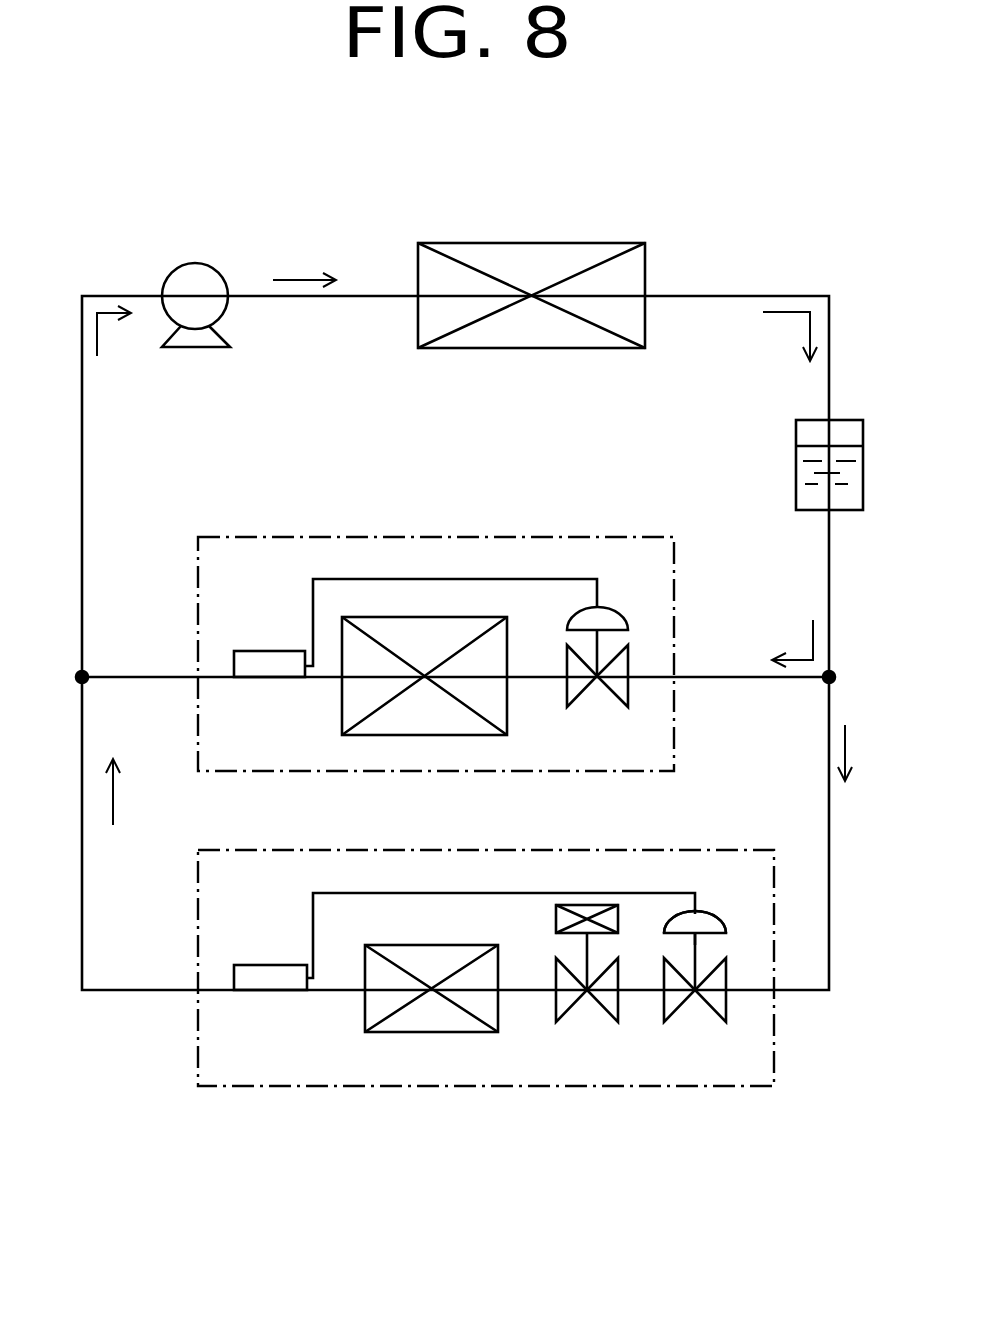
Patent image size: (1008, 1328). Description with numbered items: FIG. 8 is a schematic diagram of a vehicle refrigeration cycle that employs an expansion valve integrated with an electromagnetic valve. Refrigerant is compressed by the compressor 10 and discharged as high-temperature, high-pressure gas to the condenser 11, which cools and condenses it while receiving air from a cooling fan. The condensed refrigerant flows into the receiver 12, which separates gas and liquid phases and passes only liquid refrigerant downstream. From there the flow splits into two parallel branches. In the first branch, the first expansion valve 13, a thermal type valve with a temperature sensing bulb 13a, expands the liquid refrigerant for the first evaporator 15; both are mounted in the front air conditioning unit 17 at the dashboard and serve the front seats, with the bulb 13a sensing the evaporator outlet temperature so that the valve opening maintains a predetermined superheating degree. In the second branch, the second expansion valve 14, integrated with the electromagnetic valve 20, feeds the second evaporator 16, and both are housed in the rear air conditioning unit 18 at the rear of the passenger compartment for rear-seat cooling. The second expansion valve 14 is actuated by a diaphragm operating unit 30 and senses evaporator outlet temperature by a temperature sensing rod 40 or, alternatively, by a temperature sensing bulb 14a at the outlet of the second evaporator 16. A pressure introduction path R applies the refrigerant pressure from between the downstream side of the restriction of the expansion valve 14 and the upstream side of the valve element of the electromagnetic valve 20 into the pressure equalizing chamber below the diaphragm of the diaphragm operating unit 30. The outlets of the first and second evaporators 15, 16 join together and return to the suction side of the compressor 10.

The compressor 10 is at (196, 263).
The condenser 11 is at (538, 243).
The receiver 12 is at (812, 424).
The first expansion valve 13 is at (612, 612).
The temperature sensing bulb 13a is at (262, 651).
The second expansion valve 14 is at (703, 1020).
The temperature sensing bulb 14a is at (265, 965).
The first evaporator 15 is at (432, 617).
The second evaporator 16 is at (415, 1032).
The front air conditioning unit 17 is at (216, 537).
The rear air conditioning unit 18 is at (512, 1086).
The electromagnetic valve 20 is at (587, 998).
The diaphragm operating unit 30 is at (705, 914).
The temperature sensing rod 40 is at (436, 1040).
The pressure introduction path R is at (695, 937).